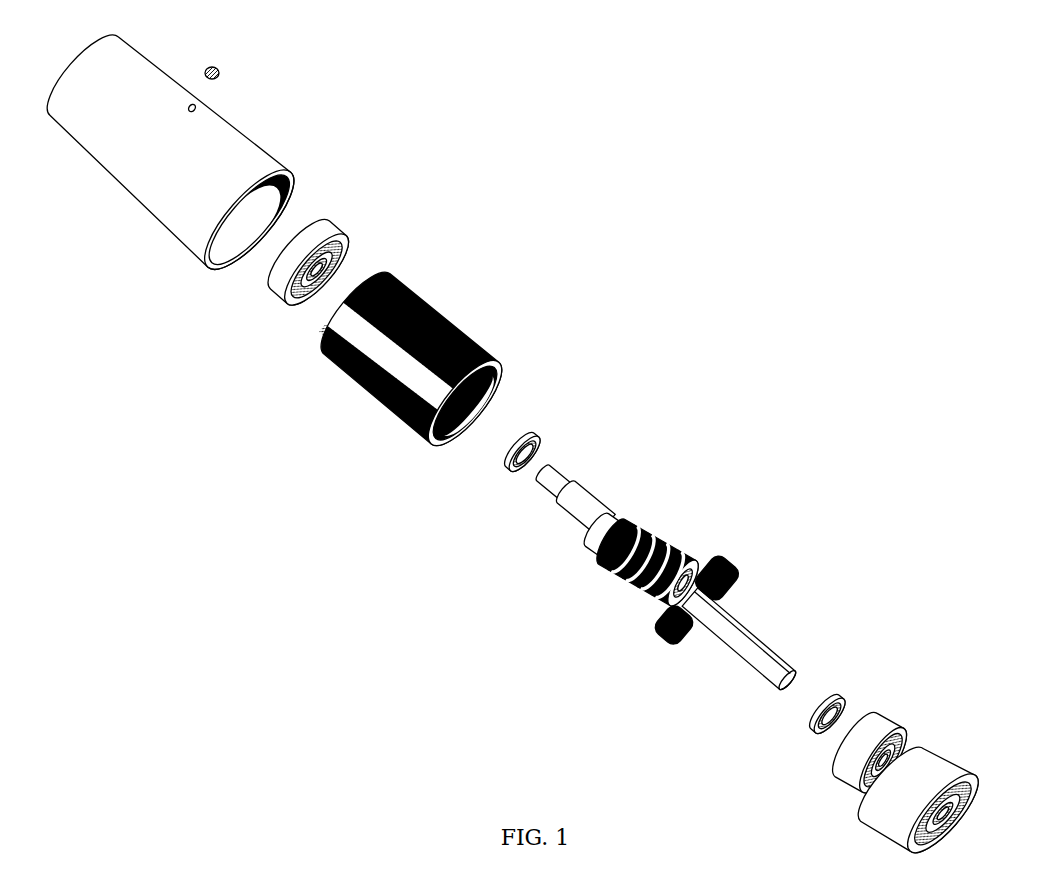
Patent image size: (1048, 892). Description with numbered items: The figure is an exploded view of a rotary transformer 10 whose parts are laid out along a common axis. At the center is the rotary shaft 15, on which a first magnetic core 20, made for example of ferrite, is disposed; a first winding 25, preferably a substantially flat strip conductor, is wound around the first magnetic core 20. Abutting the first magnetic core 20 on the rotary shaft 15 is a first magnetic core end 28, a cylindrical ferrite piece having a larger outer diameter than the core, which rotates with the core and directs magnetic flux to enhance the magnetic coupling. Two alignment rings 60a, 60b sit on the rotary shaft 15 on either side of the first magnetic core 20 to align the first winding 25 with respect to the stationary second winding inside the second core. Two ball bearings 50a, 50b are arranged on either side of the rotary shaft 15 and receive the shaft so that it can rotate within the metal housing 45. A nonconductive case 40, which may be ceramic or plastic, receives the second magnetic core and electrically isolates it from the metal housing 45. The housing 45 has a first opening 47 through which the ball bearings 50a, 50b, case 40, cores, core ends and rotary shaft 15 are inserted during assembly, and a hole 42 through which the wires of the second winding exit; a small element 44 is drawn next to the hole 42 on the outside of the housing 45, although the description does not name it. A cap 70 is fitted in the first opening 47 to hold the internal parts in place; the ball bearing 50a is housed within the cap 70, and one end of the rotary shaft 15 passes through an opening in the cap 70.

The rotary transformer 10 is at (717, 166).
The rotary shaft 15 is at (565, 516).
The first magnetic core 20 is at (600, 562).
The first winding 25 is at (690, 525).
The first magnetic core end 28 is at (723, 560).
The nonconductive case 40 is at (422, 293).
The hole 42 is at (198, 100).
The screw 44 is at (211, 60).
The metal housing 45 is at (237, 150).
The first opening 47 is at (289, 187).
The ball bearing 50a is at (887, 712).
The ball bearing 50b is at (322, 223).
The alignment ring 60a is at (825, 688).
The alignment ring 60b is at (522, 423).
The cap 70 is at (952, 742).